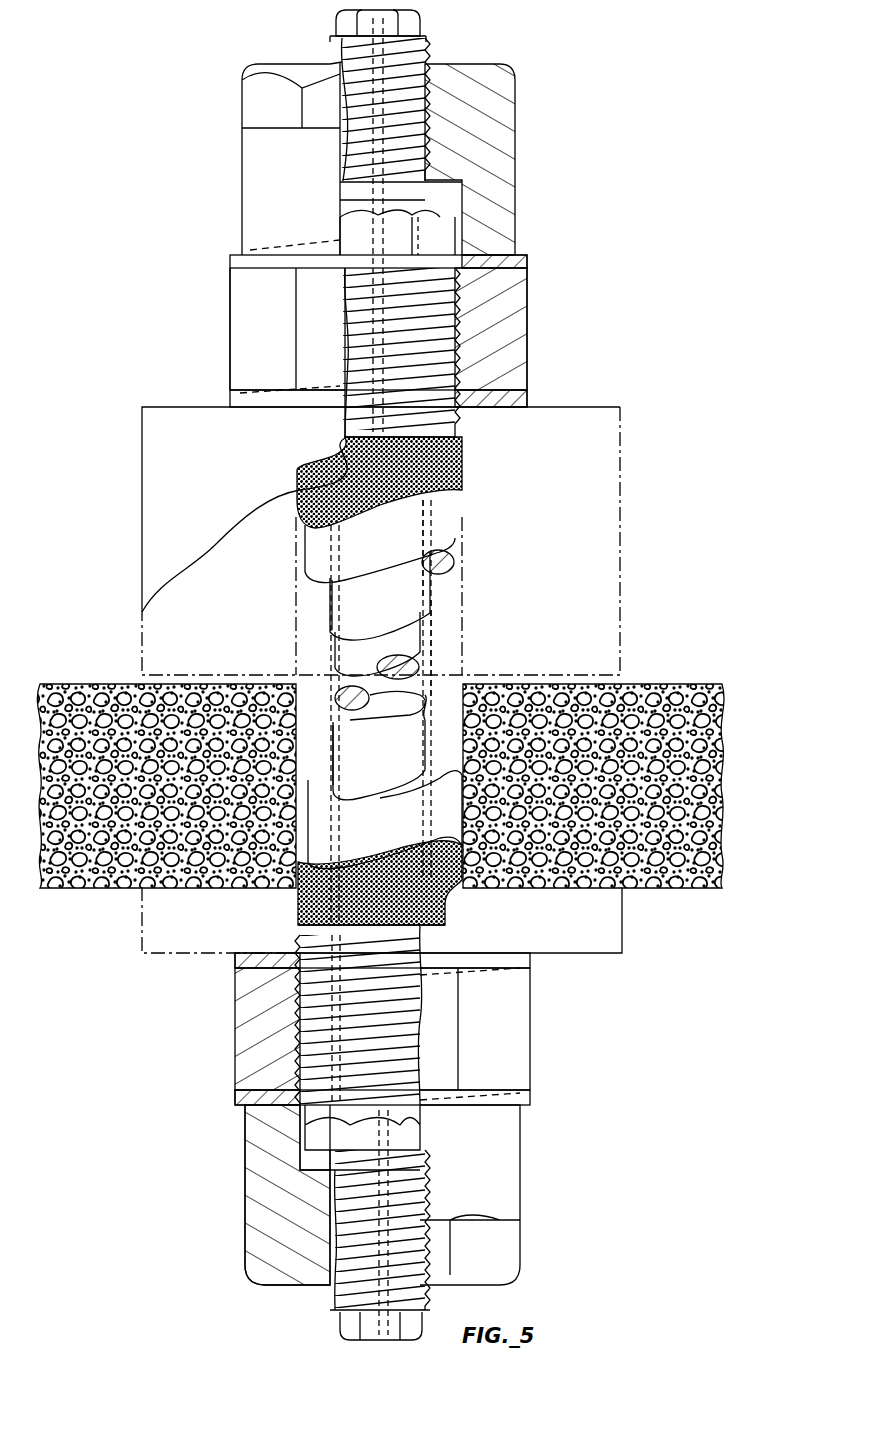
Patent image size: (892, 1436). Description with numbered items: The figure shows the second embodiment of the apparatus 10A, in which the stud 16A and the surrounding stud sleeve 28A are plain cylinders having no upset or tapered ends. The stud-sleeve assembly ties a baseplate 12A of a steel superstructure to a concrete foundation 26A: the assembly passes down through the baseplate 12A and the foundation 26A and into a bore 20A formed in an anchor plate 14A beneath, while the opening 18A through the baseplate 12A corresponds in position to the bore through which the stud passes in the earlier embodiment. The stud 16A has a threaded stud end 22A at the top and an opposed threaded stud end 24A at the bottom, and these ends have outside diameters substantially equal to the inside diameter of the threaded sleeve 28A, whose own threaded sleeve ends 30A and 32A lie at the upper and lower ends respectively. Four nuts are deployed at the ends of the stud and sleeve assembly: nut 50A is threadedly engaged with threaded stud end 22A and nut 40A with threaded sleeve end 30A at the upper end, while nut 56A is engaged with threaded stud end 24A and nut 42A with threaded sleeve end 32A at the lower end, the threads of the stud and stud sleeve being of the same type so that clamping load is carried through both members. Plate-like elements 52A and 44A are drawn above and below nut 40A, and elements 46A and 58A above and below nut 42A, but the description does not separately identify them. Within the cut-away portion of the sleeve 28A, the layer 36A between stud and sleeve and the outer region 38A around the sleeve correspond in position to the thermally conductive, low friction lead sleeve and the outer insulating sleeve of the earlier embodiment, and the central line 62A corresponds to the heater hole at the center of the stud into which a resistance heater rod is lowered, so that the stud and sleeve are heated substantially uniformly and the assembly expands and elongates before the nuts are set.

The apparatus 10A is at (535, 296).
The baseplate 12A is at (155, 508).
The anchor plate 14A is at (608, 908).
The stud 16A is at (327, 700).
The stud shank 18A is at (455, 600).
The bore 20A is at (310, 685).
The threaded stud end 22A is at (425, 45).
The threaded stud end 24A is at (330, 1295).
The concrete foundation 26A is at (645, 882).
The stud sleeve 28A is at (330, 562).
The threaded sleeve end 30A is at (352, 322).
The threaded sleeve end 32A is at (318, 1070).
The stud surface 36A is at (372, 612).
The stud cross section 38A is at (445, 888).
The nut 40A is at (500, 345).
The nut 42A is at (512, 1005).
The washer 44A is at (505, 395).
The lower washer 46A is at (248, 960).
The nut 50A is at (255, 188).
The washer 52A is at (510, 255).
The nut 56A is at (490, 1165).
The washer 58A is at (240, 1100).
The stud axis 62A is at (420, 690).